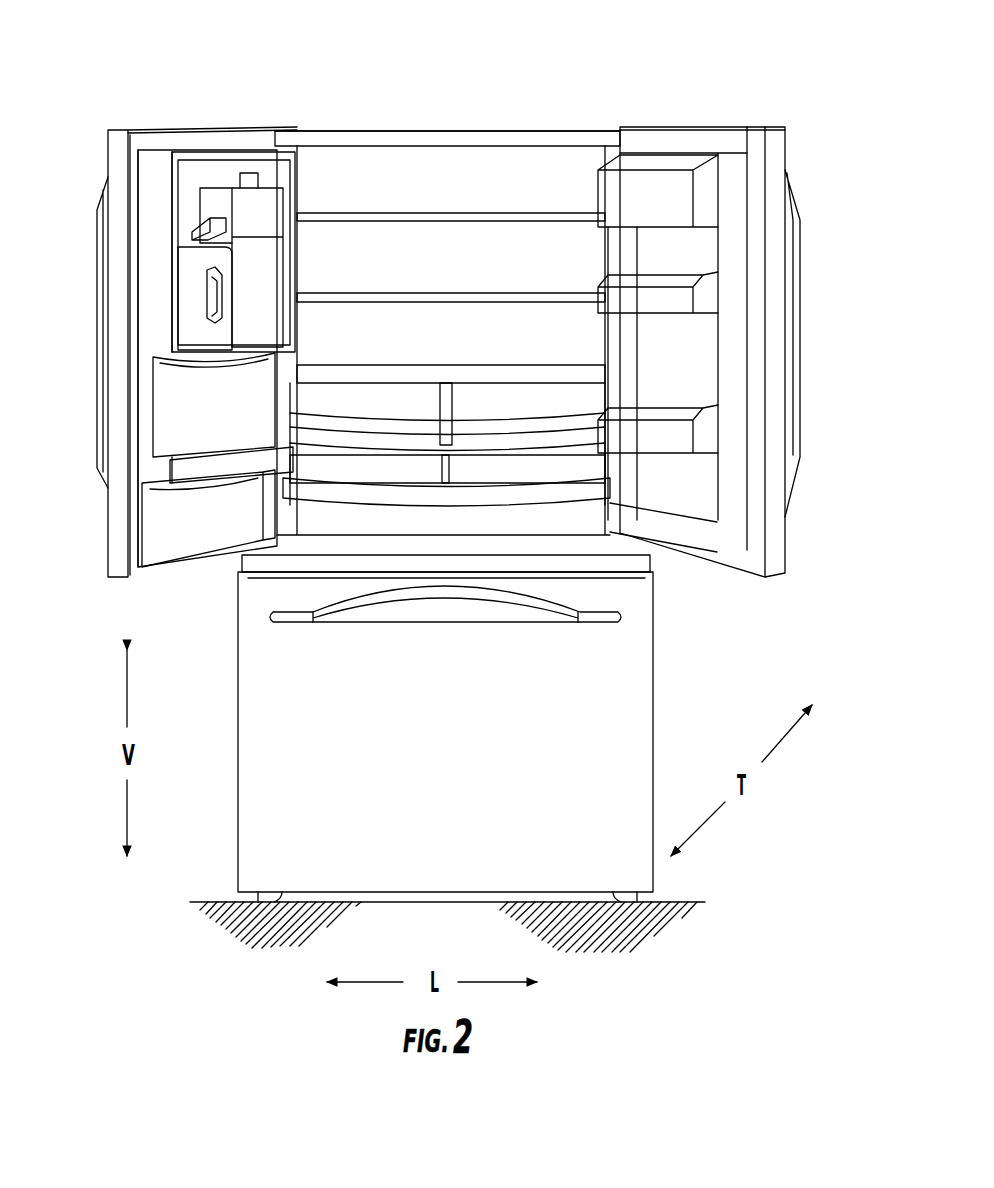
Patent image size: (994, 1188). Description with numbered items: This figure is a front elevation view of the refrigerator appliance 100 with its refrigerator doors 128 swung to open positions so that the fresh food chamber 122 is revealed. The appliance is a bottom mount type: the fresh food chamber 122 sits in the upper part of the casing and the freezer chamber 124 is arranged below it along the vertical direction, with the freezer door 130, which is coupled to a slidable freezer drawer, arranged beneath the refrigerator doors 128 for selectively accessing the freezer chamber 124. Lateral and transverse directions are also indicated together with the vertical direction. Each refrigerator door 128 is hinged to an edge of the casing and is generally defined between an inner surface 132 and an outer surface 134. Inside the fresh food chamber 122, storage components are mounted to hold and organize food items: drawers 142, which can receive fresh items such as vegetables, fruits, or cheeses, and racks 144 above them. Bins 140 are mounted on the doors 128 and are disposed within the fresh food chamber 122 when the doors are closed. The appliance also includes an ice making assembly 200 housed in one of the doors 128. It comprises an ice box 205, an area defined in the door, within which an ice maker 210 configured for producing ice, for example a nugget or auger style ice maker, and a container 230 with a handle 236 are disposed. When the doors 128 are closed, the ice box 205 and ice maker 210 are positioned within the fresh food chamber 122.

The refrigerator appliance 100 is at (675, 58).
The fresh food chamber 122 is at (396, 165).
The freezer chamber 124 is at (630, 761).
The refrigerator doors 128 is at (142, 128).
The freezer door 130 is at (265, 752).
The inner surface 132 is at (168, 405).
The outer surface 134 is at (110, 381).
The bins 140 is at (197, 473).
The drawers 142 is at (386, 397).
The racks 144 is at (462, 293).
The ice making assembly 200 is at (258, 162).
The ice box 205 is at (200, 166).
The ice maker 210 is at (268, 207).
The container 230 is at (193, 273).
The handle 236 is at (213, 310).